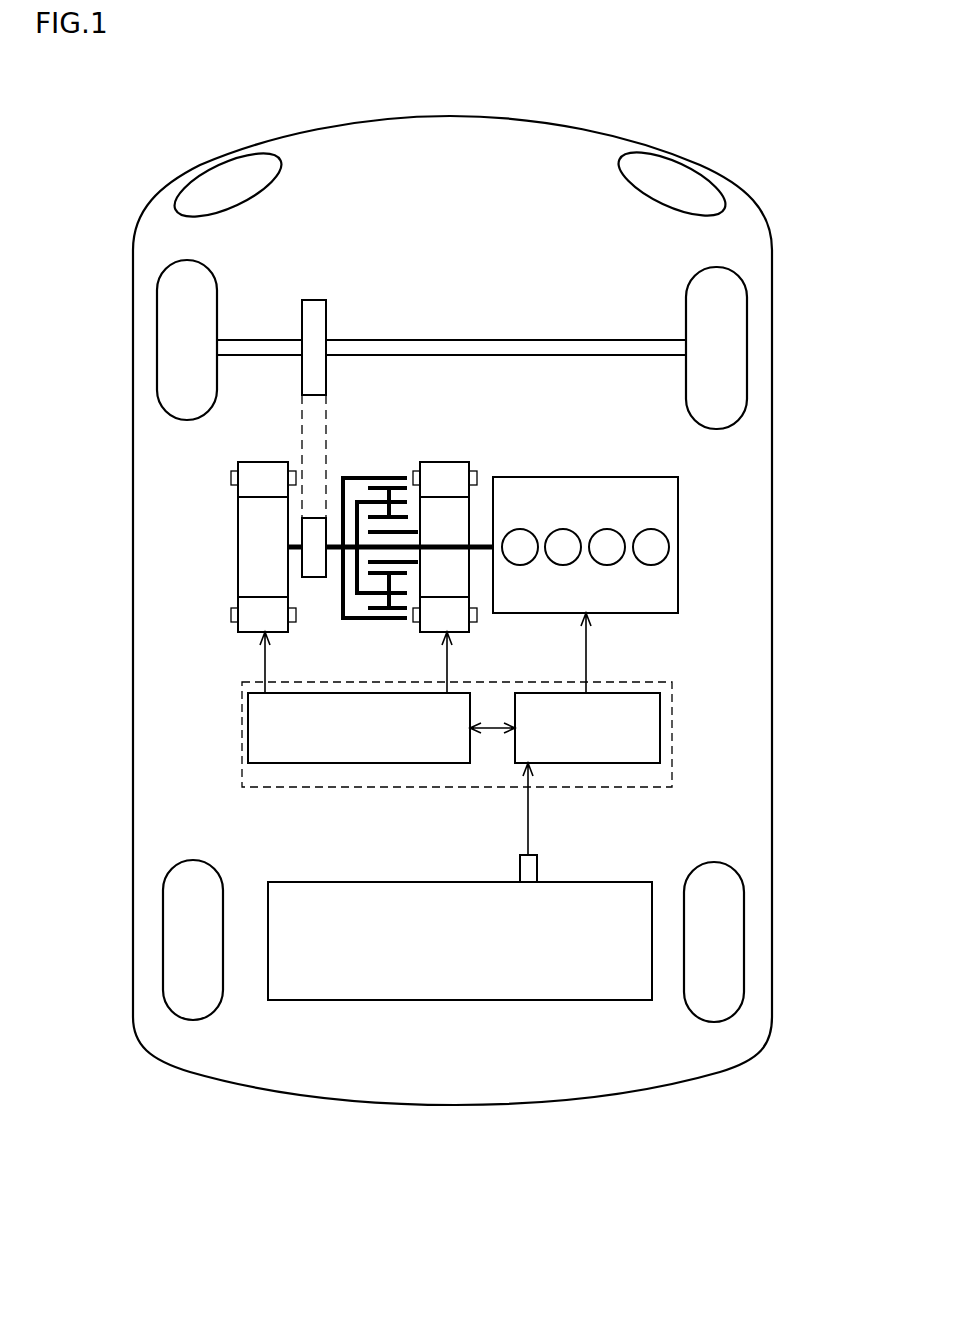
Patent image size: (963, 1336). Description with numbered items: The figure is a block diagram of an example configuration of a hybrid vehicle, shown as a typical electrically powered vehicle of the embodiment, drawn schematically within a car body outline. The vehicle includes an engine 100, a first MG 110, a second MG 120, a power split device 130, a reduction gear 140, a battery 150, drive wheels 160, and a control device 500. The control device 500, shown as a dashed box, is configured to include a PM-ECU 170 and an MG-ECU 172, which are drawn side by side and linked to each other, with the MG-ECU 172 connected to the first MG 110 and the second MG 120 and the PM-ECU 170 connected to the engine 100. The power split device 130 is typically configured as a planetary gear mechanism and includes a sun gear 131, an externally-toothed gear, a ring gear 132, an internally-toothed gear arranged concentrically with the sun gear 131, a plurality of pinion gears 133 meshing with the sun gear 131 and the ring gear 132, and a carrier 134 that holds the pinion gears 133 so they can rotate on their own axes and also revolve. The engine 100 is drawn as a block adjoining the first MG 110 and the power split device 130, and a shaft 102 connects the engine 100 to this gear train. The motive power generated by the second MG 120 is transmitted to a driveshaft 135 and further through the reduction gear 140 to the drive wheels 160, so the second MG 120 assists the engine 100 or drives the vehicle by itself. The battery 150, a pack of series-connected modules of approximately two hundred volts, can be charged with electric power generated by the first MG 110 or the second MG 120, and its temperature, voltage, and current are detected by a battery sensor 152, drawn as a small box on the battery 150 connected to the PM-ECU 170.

The engine 100 is at (553, 477).
The output shaft 102 is at (480, 553).
The first MG 110 is at (443, 460).
The second MG 120 is at (238, 548).
The power split device 130 is at (382, 360).
The sun gear 131 is at (413, 523).
The ring gear 132 is at (365, 478).
The pinion gears 133 is at (397, 626).
The carrier 134 is at (364, 597).
The driveshaft 135 is at (341, 560).
The reduction gear 140 is at (317, 276).
The battery 150 is at (368, 1000).
The battery sensor 152 is at (520, 868).
The drive wheels 160 is at (158, 377).
The PM-ECU 170 is at (660, 730).
The MG-ECU 172 is at (248, 728).
The control device 500 is at (453, 733).